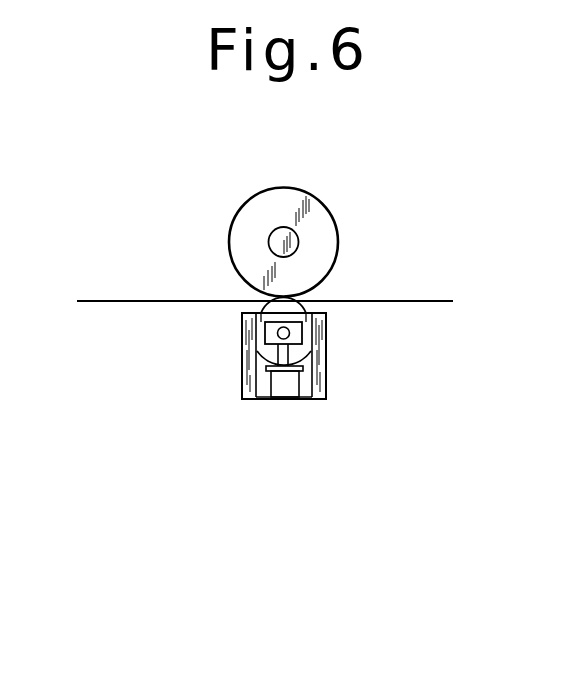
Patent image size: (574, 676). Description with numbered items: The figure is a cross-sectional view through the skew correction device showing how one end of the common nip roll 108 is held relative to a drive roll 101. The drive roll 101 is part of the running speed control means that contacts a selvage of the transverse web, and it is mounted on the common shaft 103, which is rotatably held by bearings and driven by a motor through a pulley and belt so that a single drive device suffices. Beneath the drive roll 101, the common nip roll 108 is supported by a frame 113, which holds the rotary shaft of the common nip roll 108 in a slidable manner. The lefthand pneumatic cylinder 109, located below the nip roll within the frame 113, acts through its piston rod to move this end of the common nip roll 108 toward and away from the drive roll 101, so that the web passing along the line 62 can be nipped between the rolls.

The recording sheet / platen surface 62 is at (177, 300).
The drive roll 101 is at (307, 195).
The common shaft 103 is at (298, 238).
The common nip roll 108 is at (306, 306).
The pneumatic cylinder 109 is at (289, 383).
The frame 113 is at (246, 342).